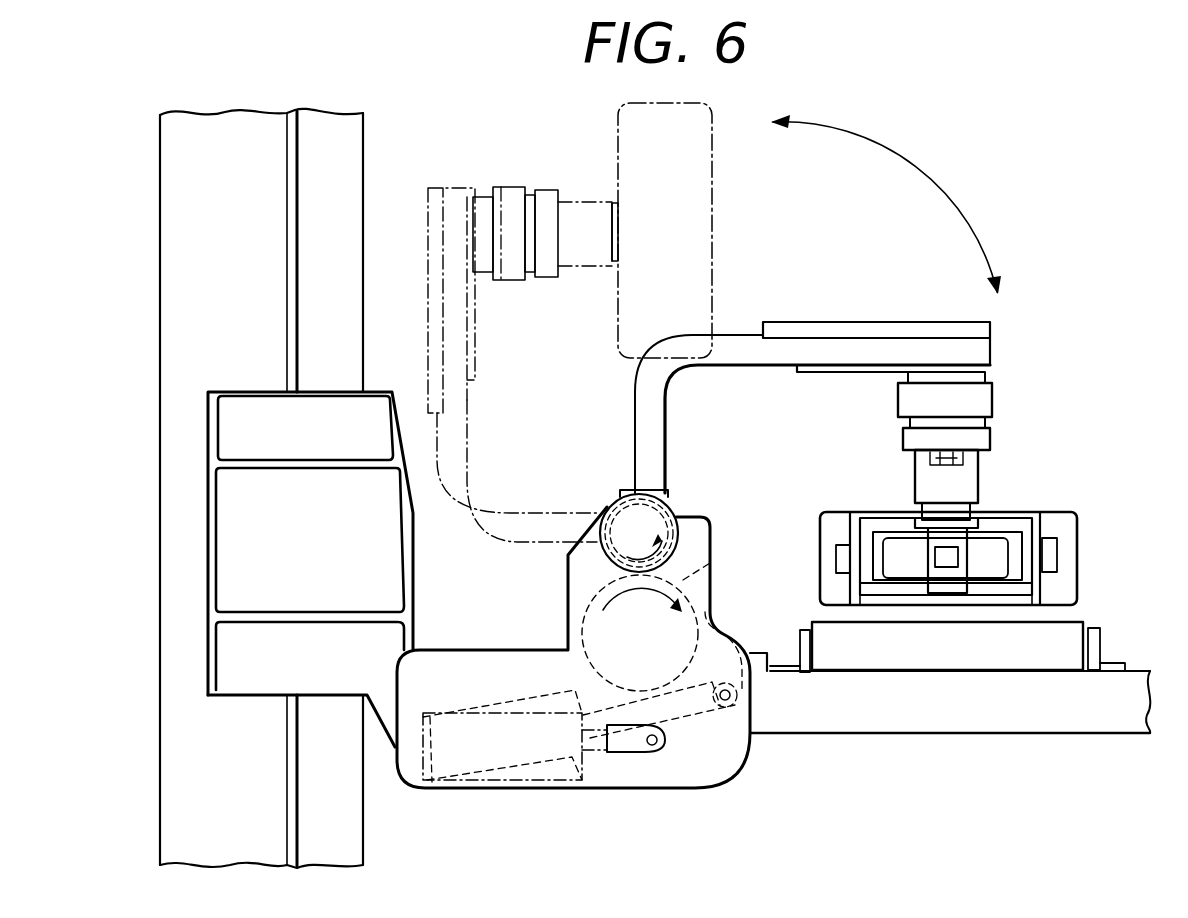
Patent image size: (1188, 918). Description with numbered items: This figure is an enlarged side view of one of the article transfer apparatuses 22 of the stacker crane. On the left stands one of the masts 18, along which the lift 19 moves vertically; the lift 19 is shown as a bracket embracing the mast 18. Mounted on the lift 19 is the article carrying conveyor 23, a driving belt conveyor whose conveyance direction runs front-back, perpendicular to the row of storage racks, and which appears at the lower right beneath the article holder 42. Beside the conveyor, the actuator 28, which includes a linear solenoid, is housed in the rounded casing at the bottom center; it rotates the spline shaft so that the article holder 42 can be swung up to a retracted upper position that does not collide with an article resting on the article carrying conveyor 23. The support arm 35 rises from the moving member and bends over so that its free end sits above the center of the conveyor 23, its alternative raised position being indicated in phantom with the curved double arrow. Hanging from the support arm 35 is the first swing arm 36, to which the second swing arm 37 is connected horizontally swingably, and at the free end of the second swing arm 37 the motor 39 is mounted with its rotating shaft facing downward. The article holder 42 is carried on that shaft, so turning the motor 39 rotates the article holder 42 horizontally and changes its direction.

The masts 18 is at (183, 613).
The lift 19 is at (265, 675).
The article transfer apparatus 22 is at (790, 309).
The article carrying conveyor 23 is at (1050, 636).
The actuator 28 is at (682, 587).
The support arm 35 is at (730, 347).
The first swing arm 36 is at (984, 398).
The second swing arm 37 is at (985, 435).
The motor 39 is at (962, 481).
The article holder 42 is at (1062, 520).